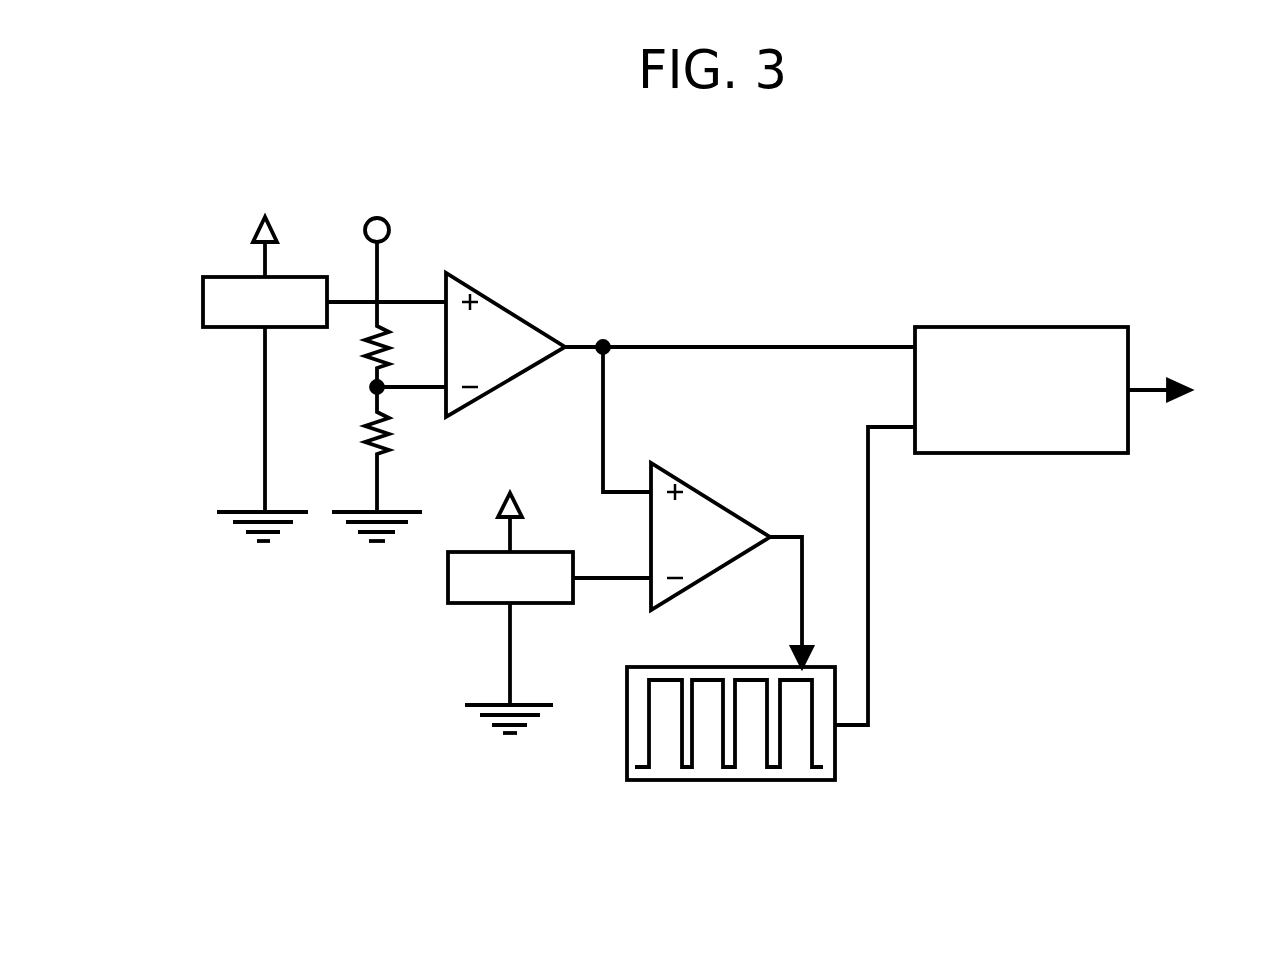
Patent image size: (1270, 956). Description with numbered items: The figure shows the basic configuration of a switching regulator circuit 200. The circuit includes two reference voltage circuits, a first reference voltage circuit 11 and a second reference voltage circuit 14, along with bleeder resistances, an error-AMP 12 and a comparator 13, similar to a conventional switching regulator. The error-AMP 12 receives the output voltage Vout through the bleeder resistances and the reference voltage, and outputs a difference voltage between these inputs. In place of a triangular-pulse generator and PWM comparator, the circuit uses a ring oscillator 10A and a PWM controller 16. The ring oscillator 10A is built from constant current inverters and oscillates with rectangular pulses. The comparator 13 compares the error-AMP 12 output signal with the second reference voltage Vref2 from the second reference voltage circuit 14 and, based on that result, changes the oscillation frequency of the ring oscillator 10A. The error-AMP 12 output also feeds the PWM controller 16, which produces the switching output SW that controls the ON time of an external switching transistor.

The switching regulator circuit 200 is at (1006, 240).
The reference voltage circuit 11 is at (223, 328).
The error-AMP 12 is at (506, 384).
The comparator 13 is at (711, 574).
The second reference voltage circuit 14 is at (463, 605).
The ring oscillator 10A is at (836, 748).
The PWM controller 16 is at (1093, 454).